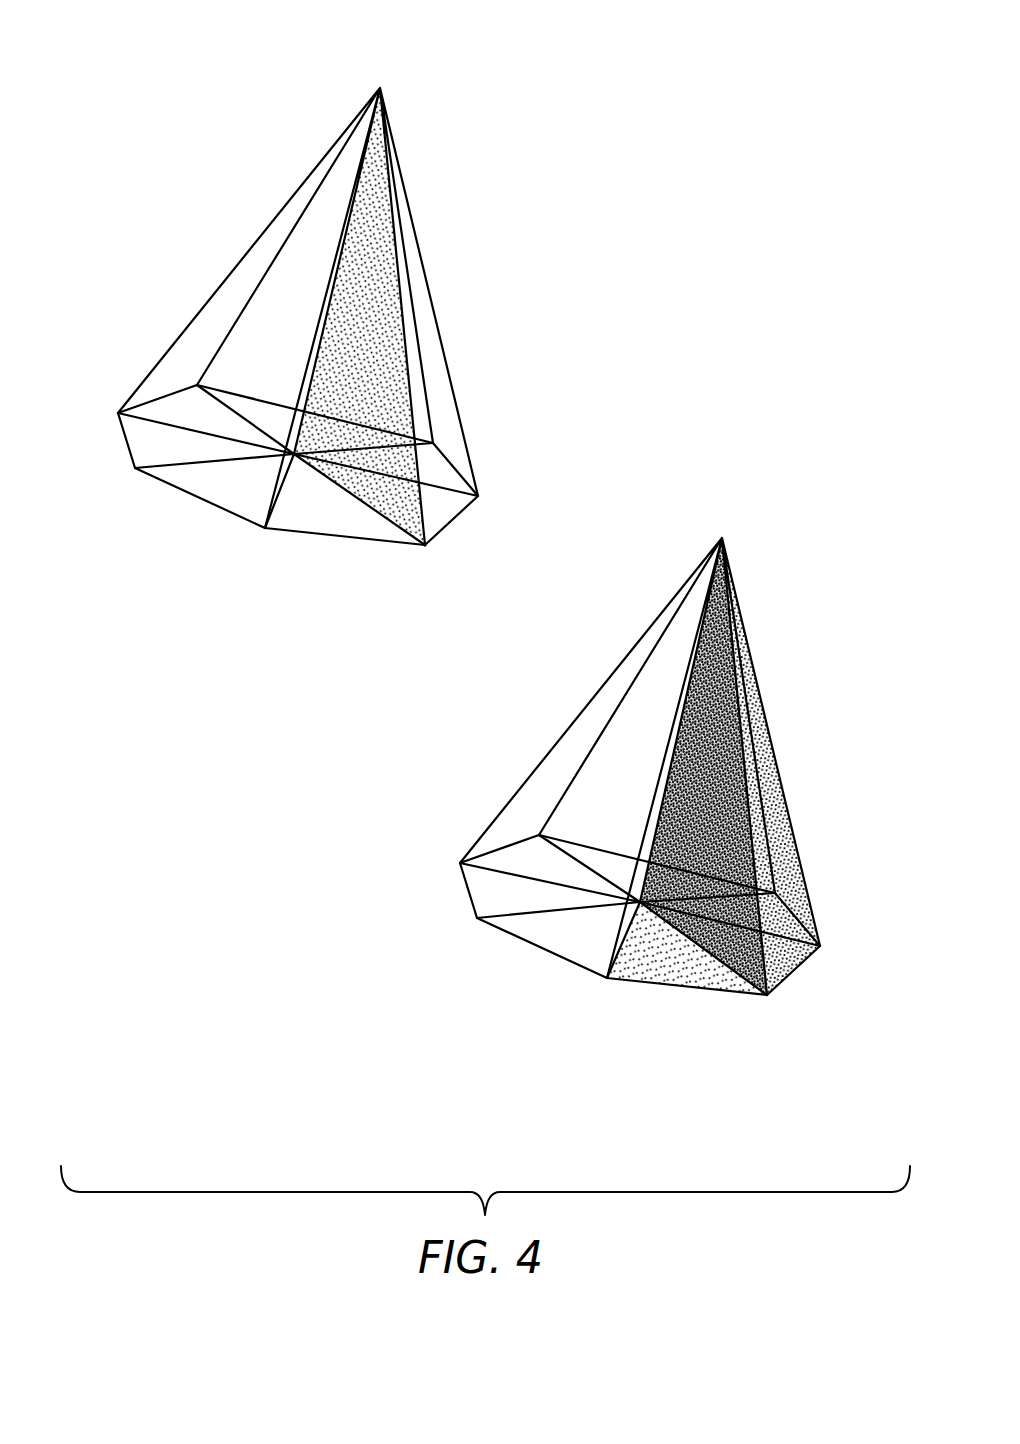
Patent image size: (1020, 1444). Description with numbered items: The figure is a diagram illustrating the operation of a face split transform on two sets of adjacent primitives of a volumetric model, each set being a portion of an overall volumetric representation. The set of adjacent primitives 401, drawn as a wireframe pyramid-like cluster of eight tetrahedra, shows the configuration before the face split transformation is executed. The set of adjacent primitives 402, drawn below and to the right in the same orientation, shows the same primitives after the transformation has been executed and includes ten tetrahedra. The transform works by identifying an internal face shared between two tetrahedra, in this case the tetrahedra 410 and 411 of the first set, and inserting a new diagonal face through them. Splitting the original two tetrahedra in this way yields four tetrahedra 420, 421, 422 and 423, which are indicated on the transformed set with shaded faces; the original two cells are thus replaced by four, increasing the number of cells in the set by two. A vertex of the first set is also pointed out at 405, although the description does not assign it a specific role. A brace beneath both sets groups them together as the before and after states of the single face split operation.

The set of adjacent primitives 401 is at (341, 330).
The set of adjacent primitives 402 is at (677, 793).
The vertex 405 is at (430, 558).
The tetrahedron 410 is at (343, 548).
The tetrahedron 411 is at (477, 520).
The tetrahedron 420 is at (653, 960).
The tetrahedron 421 is at (775, 958).
The tetrahedron 422 is at (713, 968).
The tetrahedron 423 is at (780, 960).